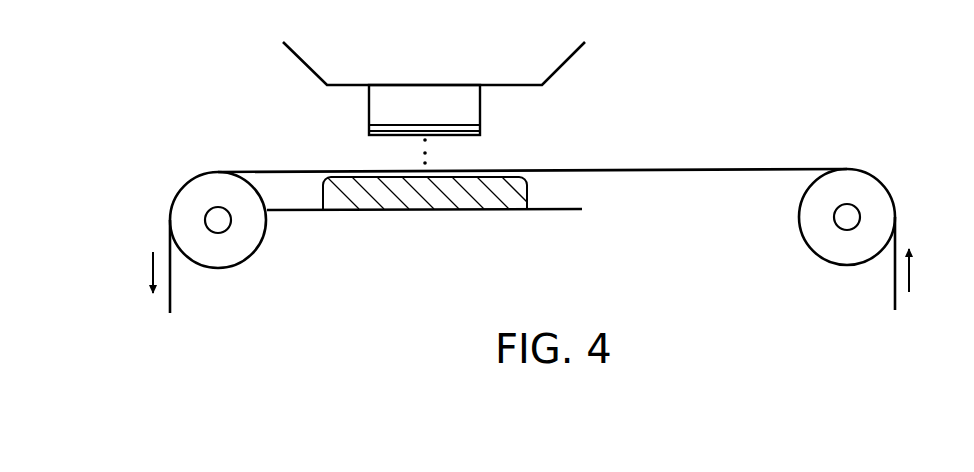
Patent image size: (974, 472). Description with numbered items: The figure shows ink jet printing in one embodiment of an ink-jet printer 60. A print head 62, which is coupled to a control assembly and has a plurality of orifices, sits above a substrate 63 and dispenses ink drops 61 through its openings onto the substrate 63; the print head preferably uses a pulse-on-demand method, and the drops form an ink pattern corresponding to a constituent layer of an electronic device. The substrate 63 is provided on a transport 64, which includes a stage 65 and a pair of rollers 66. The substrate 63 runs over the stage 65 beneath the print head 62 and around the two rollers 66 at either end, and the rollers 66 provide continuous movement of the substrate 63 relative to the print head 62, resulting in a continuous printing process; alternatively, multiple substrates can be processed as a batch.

The ink-jet printer 60 is at (619, 58).
The ink drops 61 is at (431, 153).
The print head 62 is at (481, 103).
The substrate 63 is at (732, 167).
The transport 64 is at (901, 173).
The stage 65 is at (485, 197).
The rollers 66 is at (257, 247).